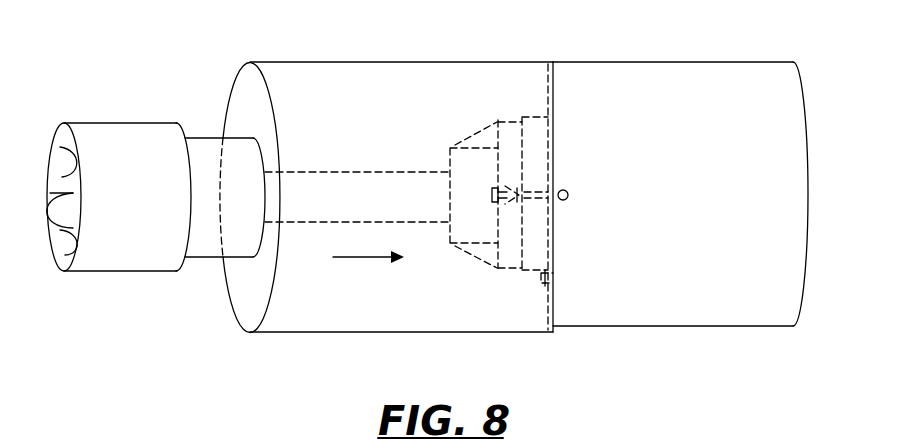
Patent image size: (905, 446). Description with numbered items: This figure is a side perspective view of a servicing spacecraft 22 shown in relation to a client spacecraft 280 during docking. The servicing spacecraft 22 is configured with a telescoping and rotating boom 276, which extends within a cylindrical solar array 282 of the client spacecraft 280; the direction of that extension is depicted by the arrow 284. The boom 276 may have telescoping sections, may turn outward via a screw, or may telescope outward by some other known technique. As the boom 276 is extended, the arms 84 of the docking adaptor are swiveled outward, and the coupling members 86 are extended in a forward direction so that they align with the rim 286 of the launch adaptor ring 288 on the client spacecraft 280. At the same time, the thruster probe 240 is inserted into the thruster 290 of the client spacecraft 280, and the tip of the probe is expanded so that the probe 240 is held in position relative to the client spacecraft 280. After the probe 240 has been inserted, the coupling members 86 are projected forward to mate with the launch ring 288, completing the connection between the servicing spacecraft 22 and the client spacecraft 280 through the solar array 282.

The servicing spacecraft 22 is at (178, 269).
The telescoping and rotating boom 276 is at (312, 172).
The arms 84 is at (496, 140).
The coupling members 86 is at (508, 121).
The rim 286 is at (513, 115).
The thruster 290 is at (503, 183).
The thruster probe 240 is at (557, 190).
The arrow 284 is at (367, 258).
The launch adaptor ring 288 is at (550, 287).
The cylindrical solar array 282 is at (397, 332).
The client spacecraft 280 is at (587, 326).